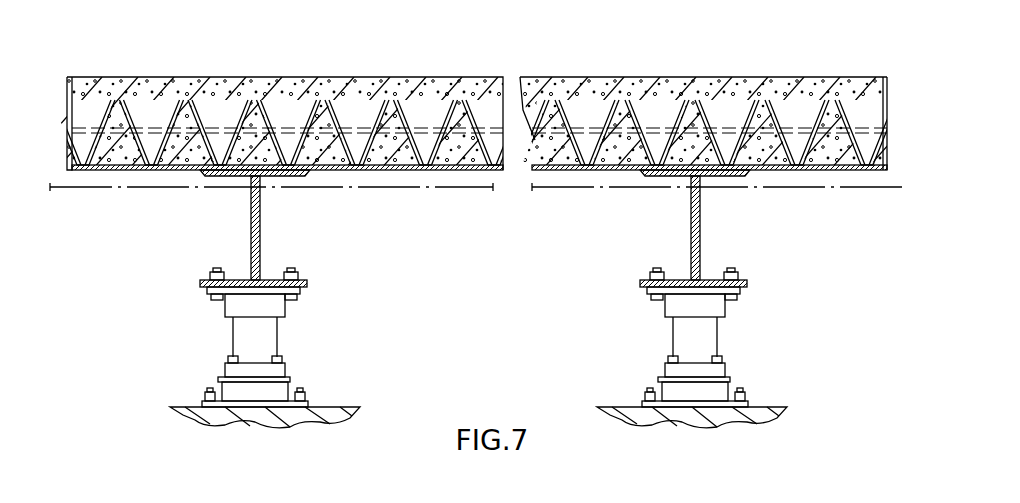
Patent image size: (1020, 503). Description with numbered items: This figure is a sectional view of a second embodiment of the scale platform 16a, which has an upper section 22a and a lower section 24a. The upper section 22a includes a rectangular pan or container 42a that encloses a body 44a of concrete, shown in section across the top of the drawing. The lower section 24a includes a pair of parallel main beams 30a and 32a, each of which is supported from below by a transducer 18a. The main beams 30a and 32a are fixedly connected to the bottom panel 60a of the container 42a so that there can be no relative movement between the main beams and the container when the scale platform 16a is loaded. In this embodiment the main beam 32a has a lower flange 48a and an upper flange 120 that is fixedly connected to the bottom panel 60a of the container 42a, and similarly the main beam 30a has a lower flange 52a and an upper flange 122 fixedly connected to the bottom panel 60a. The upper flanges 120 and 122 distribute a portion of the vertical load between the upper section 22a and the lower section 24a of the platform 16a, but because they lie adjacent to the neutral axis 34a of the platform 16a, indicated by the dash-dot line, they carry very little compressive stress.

The scale platform 16a is at (815, 60).
The body of concrete 44a is at (662, 100).
The upper section 22a is at (901, 117).
The container 42a is at (905, 138).
The bottom panel 60a is at (452, 170).
The neutral axis 34a is at (64, 187).
The main beam 30a is at (245, 224).
The upper flange 122 is at (279, 174).
The lower flange 52a is at (273, 279).
The transducers 18a is at (250, 340).
The main beam 32a is at (686, 229).
The upper flange 120 is at (717, 175).
The lower flange 48a is at (715, 280).
The lower section 24a is at (797, 273).